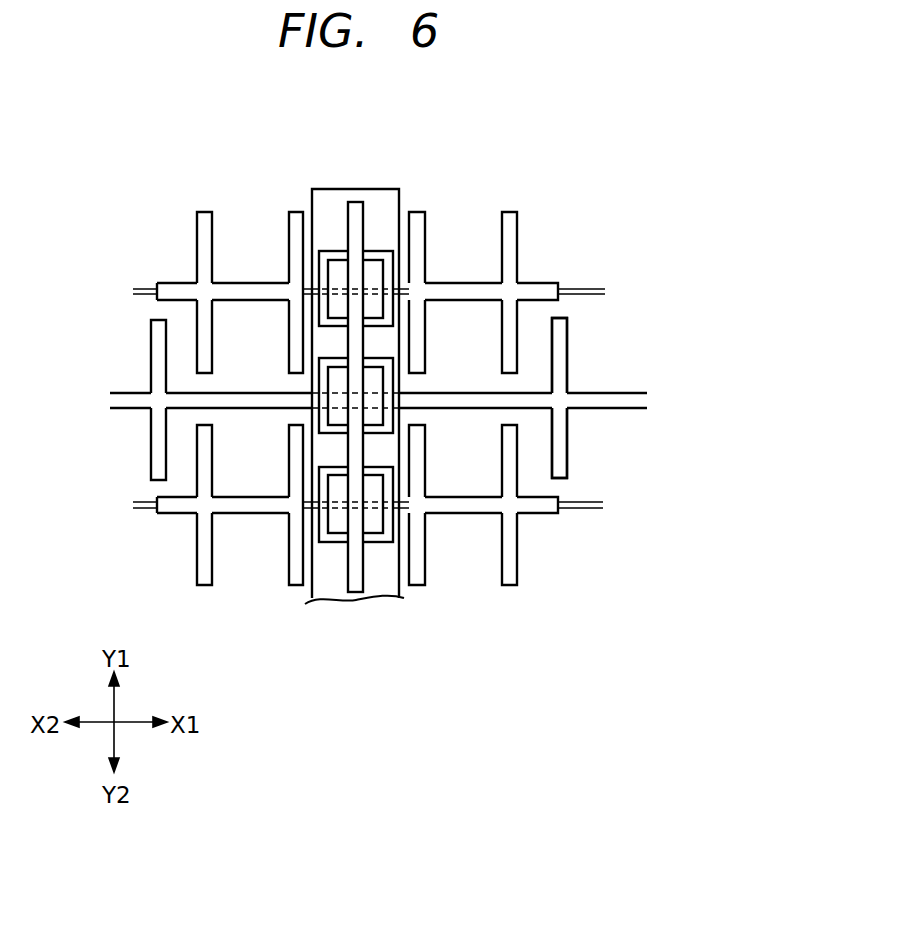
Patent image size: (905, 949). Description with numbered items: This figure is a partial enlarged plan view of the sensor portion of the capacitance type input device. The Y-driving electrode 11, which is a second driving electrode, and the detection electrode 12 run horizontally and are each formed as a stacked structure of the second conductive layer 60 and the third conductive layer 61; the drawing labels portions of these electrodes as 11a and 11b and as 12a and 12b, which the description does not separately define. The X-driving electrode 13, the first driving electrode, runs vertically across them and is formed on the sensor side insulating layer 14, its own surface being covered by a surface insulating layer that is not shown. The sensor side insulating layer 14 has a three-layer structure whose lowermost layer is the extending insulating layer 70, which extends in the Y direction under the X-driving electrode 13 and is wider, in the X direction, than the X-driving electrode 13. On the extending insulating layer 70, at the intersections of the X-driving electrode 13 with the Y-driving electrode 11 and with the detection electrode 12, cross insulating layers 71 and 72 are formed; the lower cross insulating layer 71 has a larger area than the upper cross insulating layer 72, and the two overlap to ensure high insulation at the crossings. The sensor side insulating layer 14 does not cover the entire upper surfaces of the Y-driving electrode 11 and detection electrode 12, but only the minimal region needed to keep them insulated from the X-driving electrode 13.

The Y-driving electrode 11 is at (365, 398).
The horizontal portion of first wiring 11a is at (250, 400).
The vertical portion of first wiring 11b is at (563, 330).
The detection electrode 12 is at (327, 374).
The horizontal portion of second wiring 12a is at (246, 290).
The vertical portion of second wiring 12b is at (293, 230).
The X-driving electrode 13 is at (355, 200).
The sensor side insulating layer 14 is at (402, 348).
The second conductive layer 60 is at (565, 398).
The third conductive layer 61 is at (513, 252).
The extending insulating layer 70 is at (373, 200).
The cross insulating layer 71 is at (373, 258).
The cross insulating layer 72 is at (387, 347).